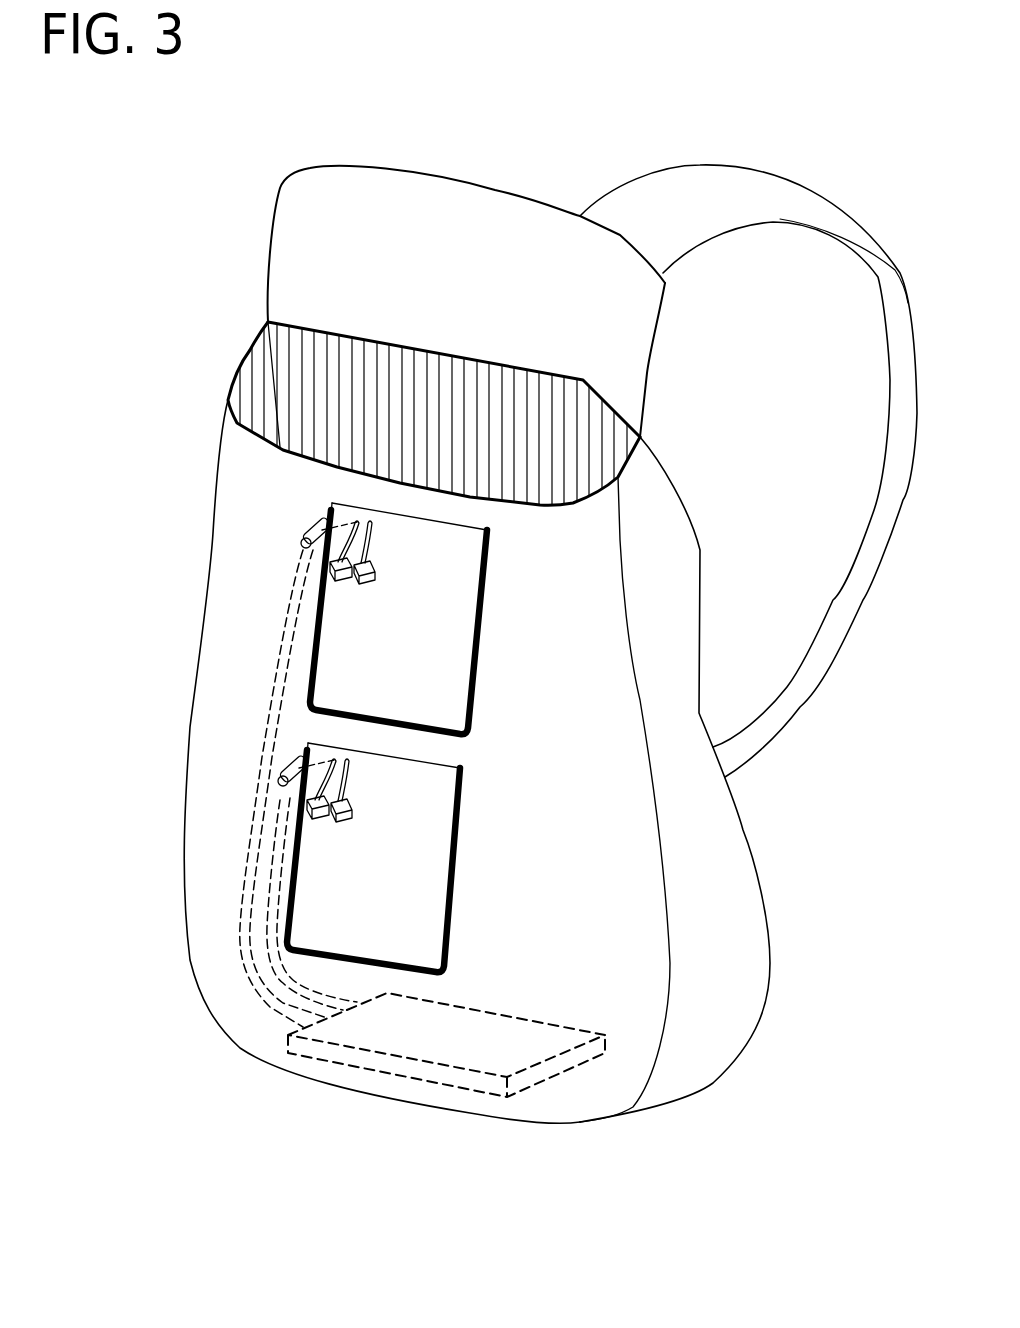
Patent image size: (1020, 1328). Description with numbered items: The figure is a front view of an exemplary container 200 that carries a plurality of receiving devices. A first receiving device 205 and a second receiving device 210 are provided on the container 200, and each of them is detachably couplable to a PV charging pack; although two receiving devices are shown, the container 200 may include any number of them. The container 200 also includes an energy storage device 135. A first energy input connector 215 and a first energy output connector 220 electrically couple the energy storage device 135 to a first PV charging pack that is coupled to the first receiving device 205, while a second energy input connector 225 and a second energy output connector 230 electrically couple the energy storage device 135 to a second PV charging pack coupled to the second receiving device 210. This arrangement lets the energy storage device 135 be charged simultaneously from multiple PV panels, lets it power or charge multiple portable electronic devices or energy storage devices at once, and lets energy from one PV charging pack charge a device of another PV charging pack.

The container 200 is at (230, 1038).
The first receiving device 205 is at (465, 815).
The second receiving device 210 is at (490, 561).
The first energy input connector 215 is at (345, 792).
The first energy output connector 220 is at (335, 765).
The second energy input connector 225 is at (370, 556).
The second energy output connector 230 is at (358, 523).
The energy storage device 135 is at (463, 1090).